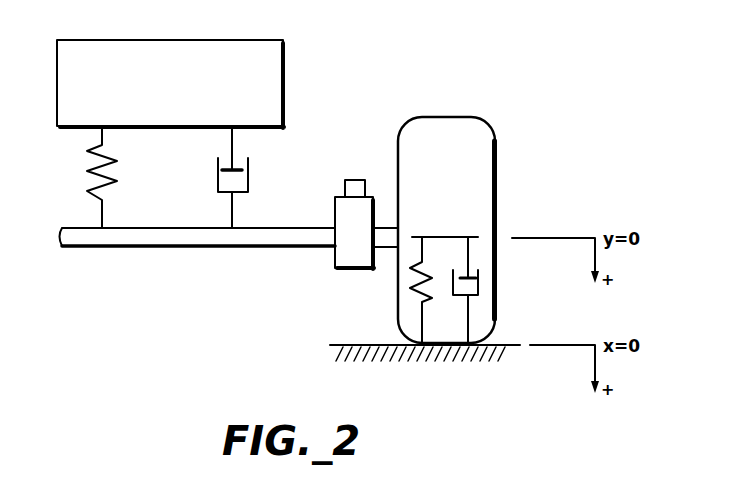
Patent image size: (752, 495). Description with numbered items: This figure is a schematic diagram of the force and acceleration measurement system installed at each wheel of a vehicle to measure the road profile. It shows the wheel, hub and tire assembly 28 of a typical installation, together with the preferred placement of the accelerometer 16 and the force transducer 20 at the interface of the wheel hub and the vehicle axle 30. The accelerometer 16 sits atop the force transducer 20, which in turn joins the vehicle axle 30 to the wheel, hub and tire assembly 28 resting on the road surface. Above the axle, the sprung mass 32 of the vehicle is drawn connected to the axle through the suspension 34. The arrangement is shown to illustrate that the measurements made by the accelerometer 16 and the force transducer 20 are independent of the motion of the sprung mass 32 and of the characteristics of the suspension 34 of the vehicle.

The sprung mass 32 is at (238, 40).
The suspension 34 is at (261, 178).
The vehicle axle 30 is at (140, 250).
The accelerometer 16 is at (353, 180).
The force transducer 20 is at (335, 265).
The wheel, hub and tire assembly 28 is at (450, 117).